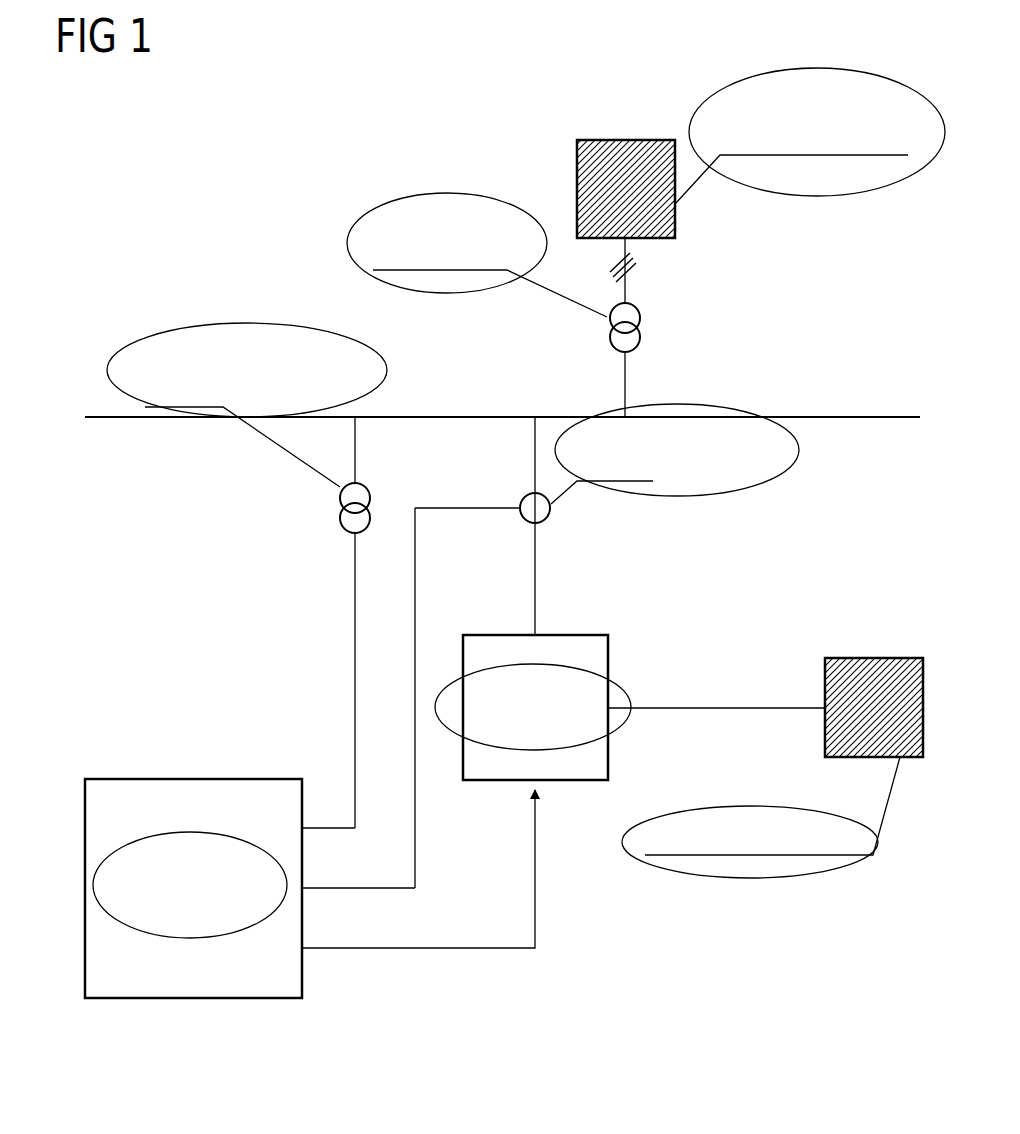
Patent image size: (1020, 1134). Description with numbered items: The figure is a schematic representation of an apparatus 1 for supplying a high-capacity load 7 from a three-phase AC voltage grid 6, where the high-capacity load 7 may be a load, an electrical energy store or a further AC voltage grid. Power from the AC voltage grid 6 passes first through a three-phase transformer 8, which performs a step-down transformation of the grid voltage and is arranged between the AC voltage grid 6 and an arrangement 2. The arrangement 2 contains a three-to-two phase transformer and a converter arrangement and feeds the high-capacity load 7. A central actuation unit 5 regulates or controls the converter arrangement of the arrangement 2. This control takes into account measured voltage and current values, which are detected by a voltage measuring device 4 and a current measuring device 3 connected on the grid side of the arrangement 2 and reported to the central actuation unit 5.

The apparatus 1 is at (140, 573).
The arrangement 2 is at (577, 780).
The current measuring device 3 is at (551, 508).
The voltage measuring device 4 is at (340, 512).
The central actuation unit 5 is at (190, 998).
The three-phase AC voltage grid 6 is at (625, 140).
The high-capacity load 7 is at (874, 658).
The three-phase transformer 8 is at (642, 330).